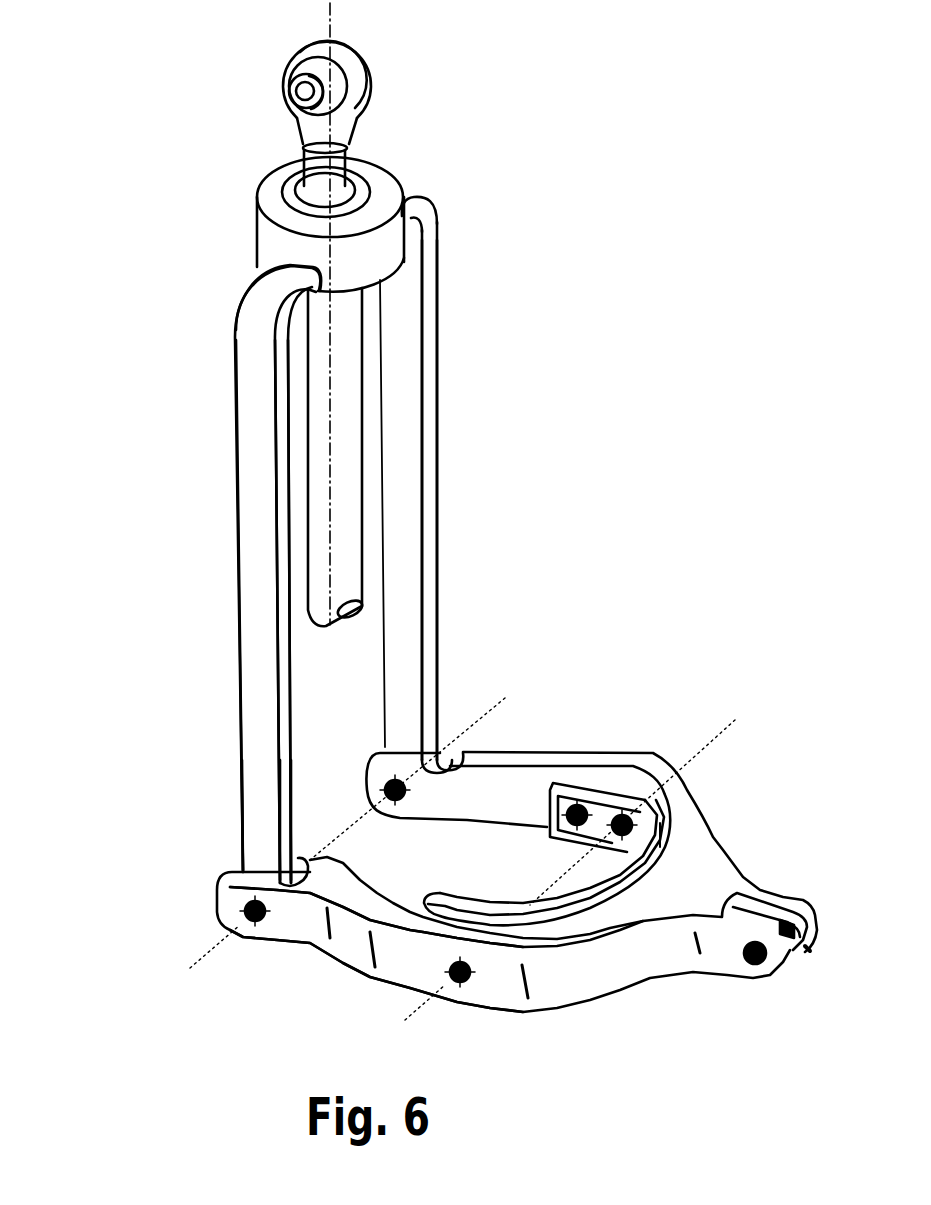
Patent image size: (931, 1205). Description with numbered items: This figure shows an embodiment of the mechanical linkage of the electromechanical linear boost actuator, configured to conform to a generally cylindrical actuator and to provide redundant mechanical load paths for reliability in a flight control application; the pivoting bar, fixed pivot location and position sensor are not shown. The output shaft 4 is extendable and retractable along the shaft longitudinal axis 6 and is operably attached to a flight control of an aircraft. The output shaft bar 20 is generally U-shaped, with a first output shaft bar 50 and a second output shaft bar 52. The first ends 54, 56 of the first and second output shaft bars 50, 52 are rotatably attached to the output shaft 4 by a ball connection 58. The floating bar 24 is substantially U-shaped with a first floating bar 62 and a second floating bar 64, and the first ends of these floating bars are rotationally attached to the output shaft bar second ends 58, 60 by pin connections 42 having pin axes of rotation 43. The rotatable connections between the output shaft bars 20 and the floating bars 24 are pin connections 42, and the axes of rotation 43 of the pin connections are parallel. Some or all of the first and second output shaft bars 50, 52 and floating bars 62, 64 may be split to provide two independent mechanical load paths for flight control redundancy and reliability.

The shaft longitudinal axis 6 is at (320, 8).
The output shaft 4 is at (345, 135).
The ball connection 58 is at (270, 193).
The first end of second output shaft bar 56 is at (258, 305).
The first end of first output shaft bar 54 is at (420, 222).
The output shaft bar 20 is at (245, 458).
The first output shaft bar 50 is at (400, 485).
The second output shaft bar 52 is at (262, 565).
The output shaft bar second end 60 is at (258, 835).
The floating bar 24 is at (585, 965).
The second floating bar 64 is at (355, 940).
The first floating bar 62 is at (515, 790).
The pin connection 42 is at (395, 790).
The pin axis of rotation 43 is at (505, 697).